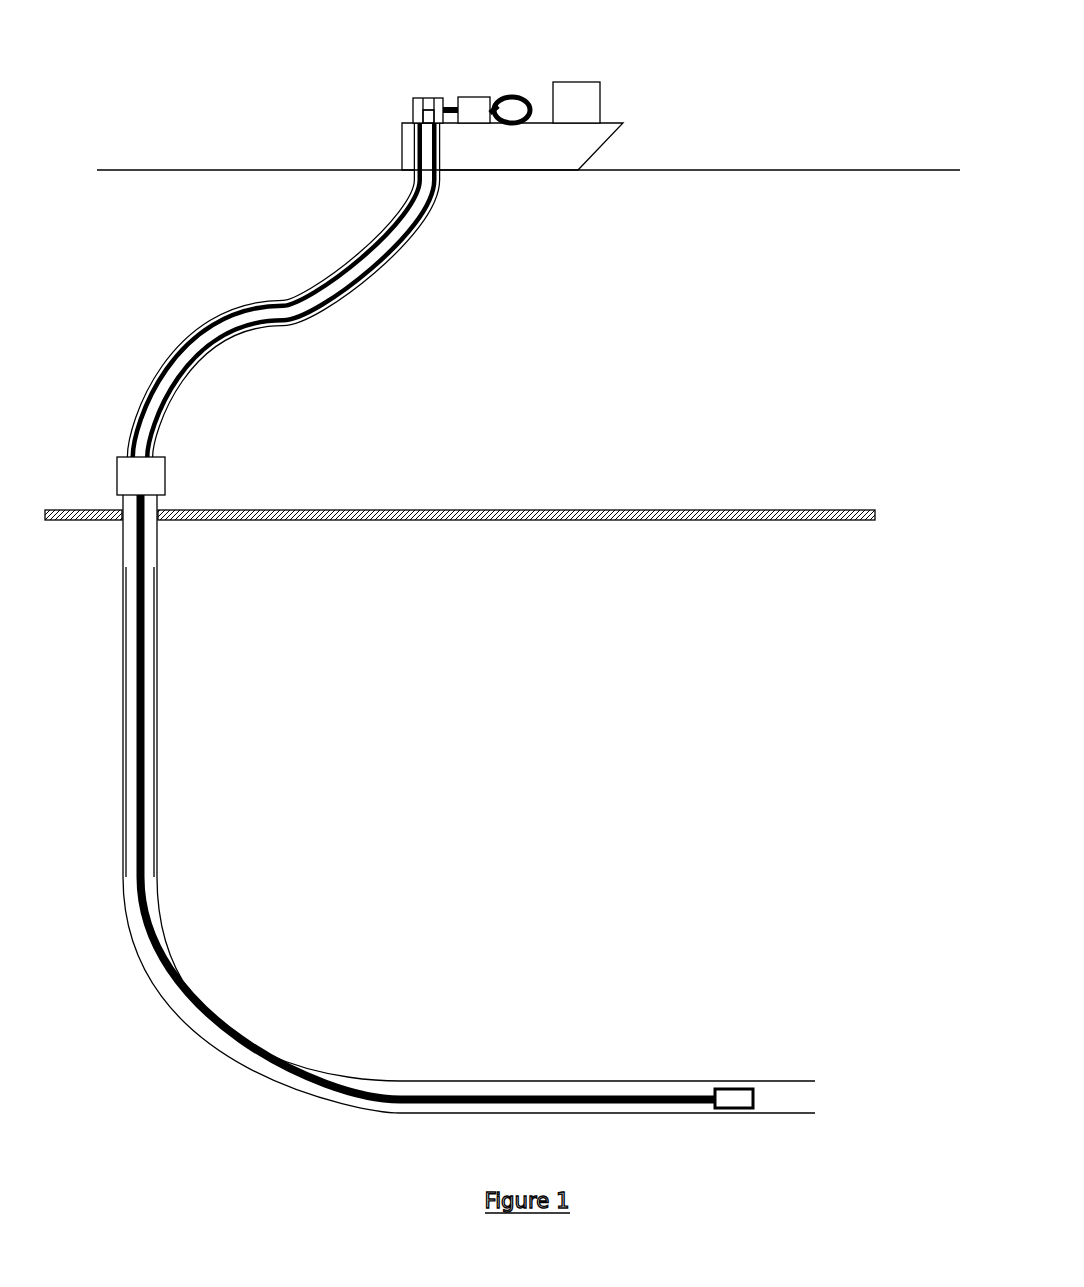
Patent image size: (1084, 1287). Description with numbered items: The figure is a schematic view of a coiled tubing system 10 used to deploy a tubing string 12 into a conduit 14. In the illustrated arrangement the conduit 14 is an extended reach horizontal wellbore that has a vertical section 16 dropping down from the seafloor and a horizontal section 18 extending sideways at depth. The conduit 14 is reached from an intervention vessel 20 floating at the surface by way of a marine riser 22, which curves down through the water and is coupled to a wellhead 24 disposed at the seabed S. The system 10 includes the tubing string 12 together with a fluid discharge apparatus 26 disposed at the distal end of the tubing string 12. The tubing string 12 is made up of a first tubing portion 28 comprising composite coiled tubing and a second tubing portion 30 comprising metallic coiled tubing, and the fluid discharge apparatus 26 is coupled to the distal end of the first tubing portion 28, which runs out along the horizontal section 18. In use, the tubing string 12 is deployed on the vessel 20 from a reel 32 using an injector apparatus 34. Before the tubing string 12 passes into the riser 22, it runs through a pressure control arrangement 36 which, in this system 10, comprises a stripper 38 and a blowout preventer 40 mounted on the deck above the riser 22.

The coiled tubing system 10 is at (528, 701).
The tubing string 12 is at (170, 965).
The conduit 14 is at (155, 790).
The vertical section 16 is at (156, 642).
The horizontal section 18 is at (547, 1082).
The intervention vessel 20 is at (602, 110).
The marine riser 22 is at (227, 315).
The wellhead 24 is at (167, 478).
The fluid discharge apparatus 26 is at (732, 1087).
The first tubing portion 28 is at (638, 1097).
The second tubing portion 30 is at (145, 728).
The reel 32 is at (520, 95).
The injector apparatus 34 is at (475, 97).
The pressure control arrangement 36 is at (433, 98).
The stripper 38 is at (428, 103).
The blowout preventer 40 is at (428, 115).
The seabed S is at (360, 510).